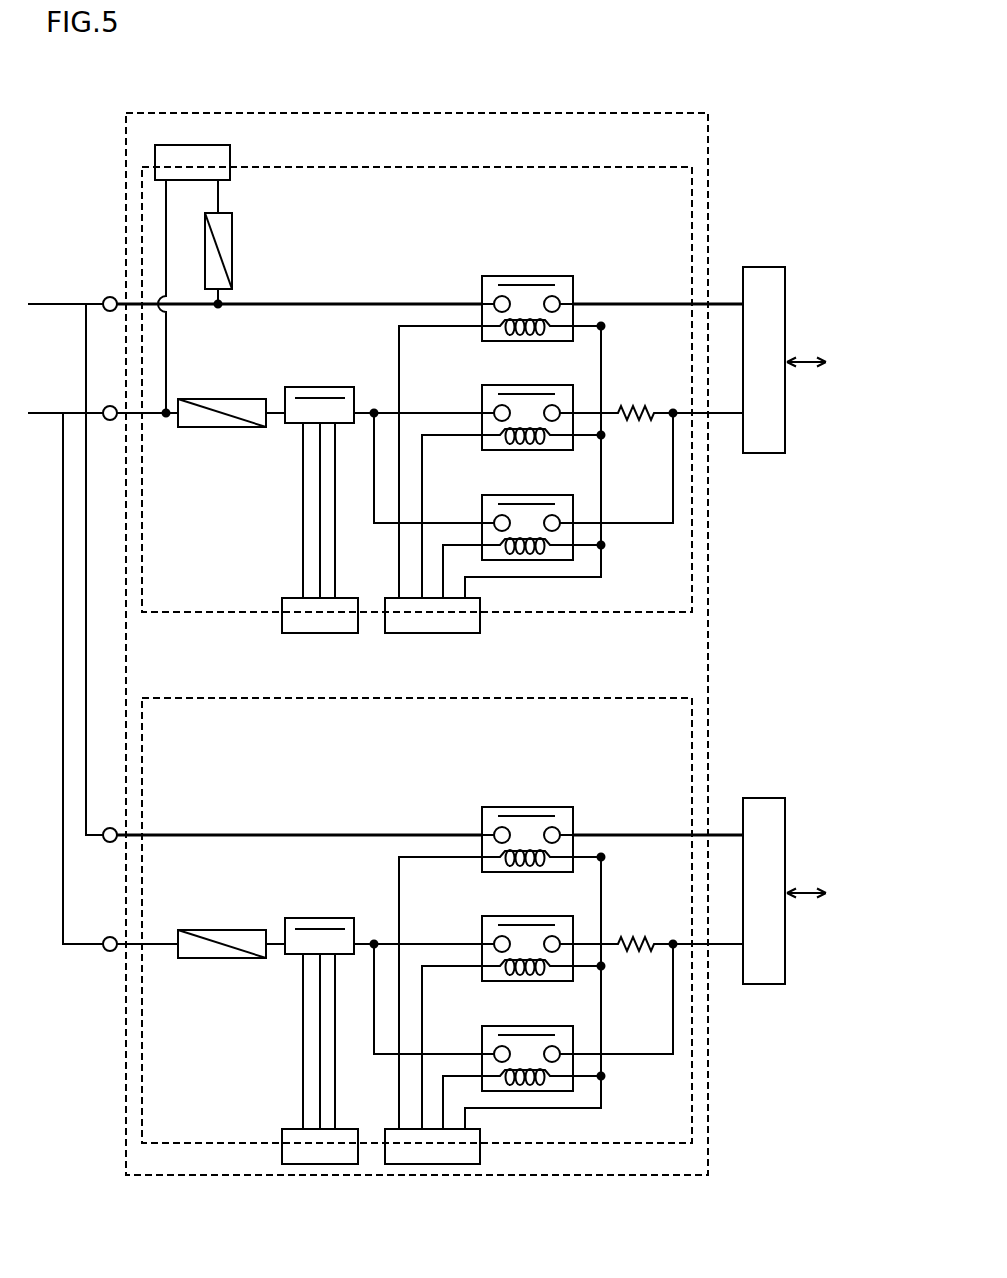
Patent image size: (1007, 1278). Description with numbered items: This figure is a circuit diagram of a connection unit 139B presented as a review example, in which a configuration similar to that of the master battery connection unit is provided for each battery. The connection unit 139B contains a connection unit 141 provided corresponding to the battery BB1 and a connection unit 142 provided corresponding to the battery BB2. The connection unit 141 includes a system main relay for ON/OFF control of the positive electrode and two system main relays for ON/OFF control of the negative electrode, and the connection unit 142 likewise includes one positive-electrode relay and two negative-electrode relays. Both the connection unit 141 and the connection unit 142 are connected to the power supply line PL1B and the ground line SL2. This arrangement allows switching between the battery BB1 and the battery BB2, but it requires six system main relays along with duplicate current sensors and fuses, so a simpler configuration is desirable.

The connection unit 139B is at (414, 113).
The connection unit 141 is at (285, 162).
The connection unit 142 is at (285, 695).
The power supply line PL1B is at (52, 298).
The ground line SL2 is at (47, 408).
The battery BB1 is at (797, 360).
The battery BB2 is at (797, 891).